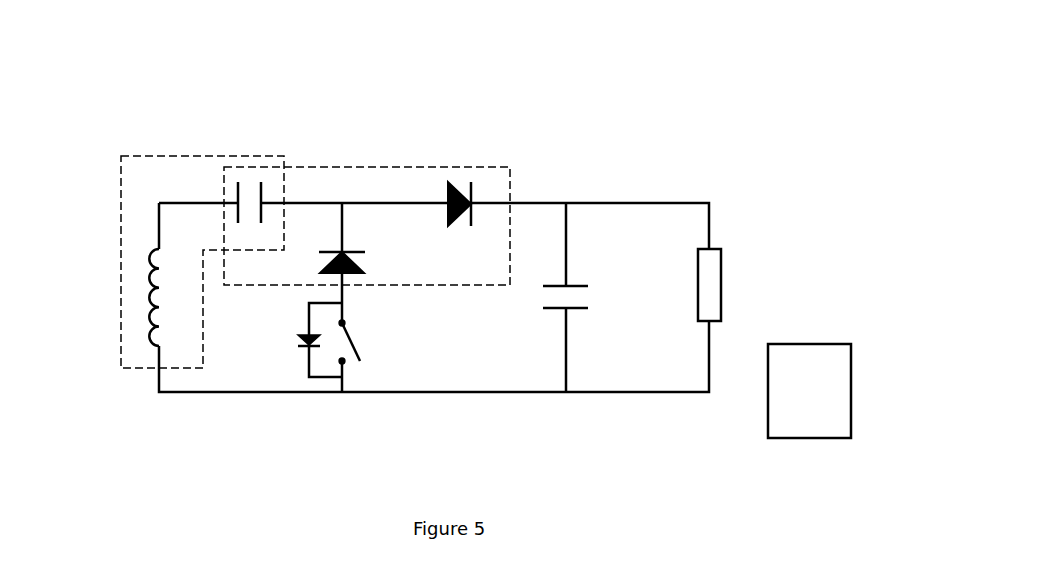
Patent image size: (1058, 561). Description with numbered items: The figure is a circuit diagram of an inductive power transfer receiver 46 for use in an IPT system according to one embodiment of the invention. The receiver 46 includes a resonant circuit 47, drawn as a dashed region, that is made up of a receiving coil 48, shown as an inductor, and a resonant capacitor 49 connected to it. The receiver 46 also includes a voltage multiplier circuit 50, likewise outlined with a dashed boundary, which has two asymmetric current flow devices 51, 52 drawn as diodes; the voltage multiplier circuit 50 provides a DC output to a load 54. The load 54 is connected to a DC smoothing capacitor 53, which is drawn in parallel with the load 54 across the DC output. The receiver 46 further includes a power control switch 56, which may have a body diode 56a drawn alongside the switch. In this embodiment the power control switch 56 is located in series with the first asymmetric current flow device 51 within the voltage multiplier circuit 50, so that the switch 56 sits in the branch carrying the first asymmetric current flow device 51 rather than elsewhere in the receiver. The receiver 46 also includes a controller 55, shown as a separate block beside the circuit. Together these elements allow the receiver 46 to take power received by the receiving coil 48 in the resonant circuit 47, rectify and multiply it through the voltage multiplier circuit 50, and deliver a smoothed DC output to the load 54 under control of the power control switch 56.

The inductive power transfer receiver 46 is at (607, 70).
The resonant circuit 47 is at (157, 156).
The receiving coil 48 is at (148, 315).
The resonant capacitor 49 is at (236, 191).
The voltage multiplier circuit 50 is at (353, 167).
The first asymmetric current flow device 51 is at (352, 250).
The asymmetric current flow device 52 is at (459, 182).
The DC smoothing capacitor 53 is at (580, 283).
The load 54 is at (721, 280).
The controller 55 is at (810, 343).
The power control switch 56 is at (342, 361).
The body diode 56a is at (301, 345).